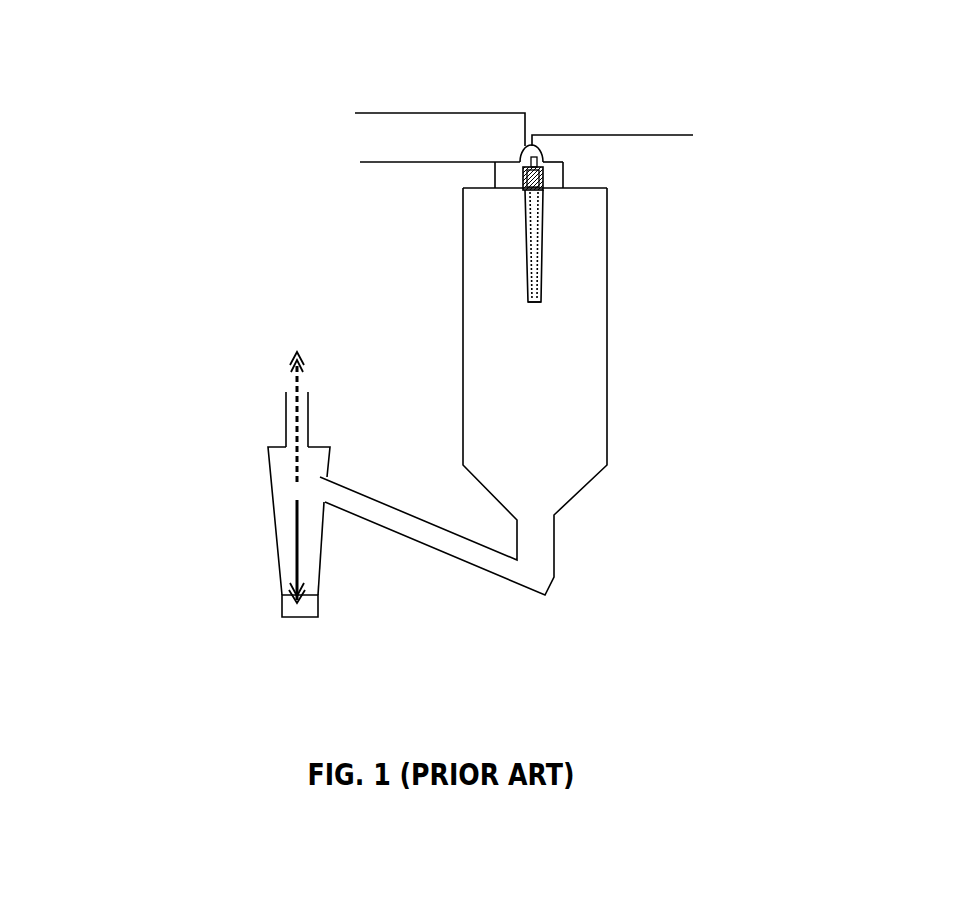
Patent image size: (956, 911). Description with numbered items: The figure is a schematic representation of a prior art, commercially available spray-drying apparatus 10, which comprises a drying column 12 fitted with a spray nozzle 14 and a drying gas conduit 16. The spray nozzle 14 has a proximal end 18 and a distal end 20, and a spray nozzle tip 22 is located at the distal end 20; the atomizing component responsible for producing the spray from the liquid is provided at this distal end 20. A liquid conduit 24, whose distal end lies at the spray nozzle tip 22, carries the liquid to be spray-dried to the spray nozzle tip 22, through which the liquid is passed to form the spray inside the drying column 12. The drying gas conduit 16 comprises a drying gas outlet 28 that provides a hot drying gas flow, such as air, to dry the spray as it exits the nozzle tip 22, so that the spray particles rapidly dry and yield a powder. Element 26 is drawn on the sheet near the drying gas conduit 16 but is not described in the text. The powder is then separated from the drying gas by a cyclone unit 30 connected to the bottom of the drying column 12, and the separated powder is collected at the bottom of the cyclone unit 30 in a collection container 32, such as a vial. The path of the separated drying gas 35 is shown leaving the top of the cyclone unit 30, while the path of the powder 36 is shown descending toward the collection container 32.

The spray-drying apparatus 10 is at (228, 113).
The drying column 12 is at (608, 375).
The spray nozzle 14 is at (527, 252).
The drying gas conduit 16 is at (363, 162).
The proximal end 18 is at (547, 176).
The distal end 20 is at (547, 295).
The spray nozzle tip 22 is at (530, 303).
The liquid conduit 24 is at (647, 135).
The powder supply conduit 26 is at (428, 113).
The drying gas outlet 28 is at (563, 188).
The cyclone unit 30 is at (267, 507).
The collection container 32 is at (297, 608).
The path of the separated drying gas 35 is at (290, 418).
The path of the powder 36 is at (293, 547).